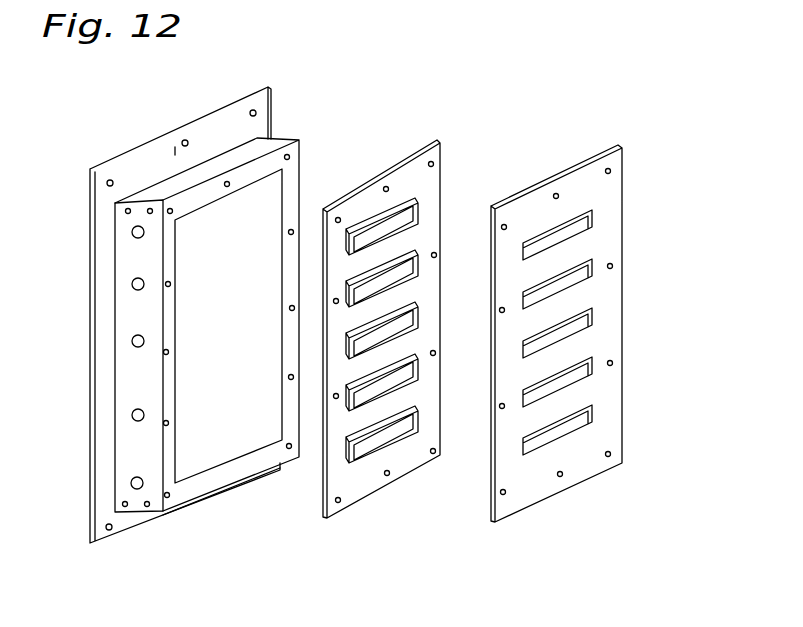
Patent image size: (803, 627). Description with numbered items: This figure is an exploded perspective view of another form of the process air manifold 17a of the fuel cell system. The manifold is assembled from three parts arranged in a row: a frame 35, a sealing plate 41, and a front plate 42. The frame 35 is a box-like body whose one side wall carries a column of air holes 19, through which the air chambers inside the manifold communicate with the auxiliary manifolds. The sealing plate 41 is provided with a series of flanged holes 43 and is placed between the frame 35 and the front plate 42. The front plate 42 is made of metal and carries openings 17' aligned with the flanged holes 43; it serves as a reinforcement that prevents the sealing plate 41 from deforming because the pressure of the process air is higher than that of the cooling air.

The frame 35 is at (133, 387).
The air holes 19 is at (133, 340).
The process air manifold 17a is at (547, 102).
The sealing plate 41 is at (333, 482).
The flanged holes 43 is at (373, 229).
The front plate 42 is at (548, 180).
The slots 17' is at (616, 328).